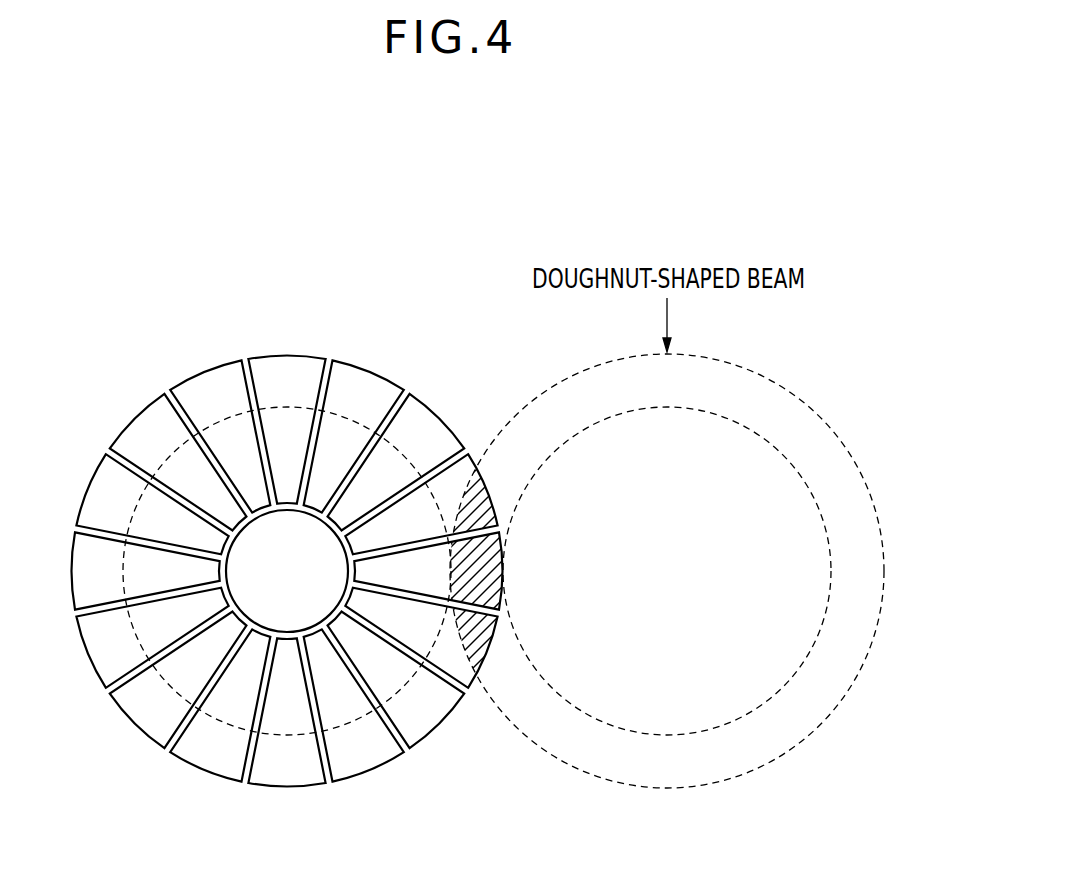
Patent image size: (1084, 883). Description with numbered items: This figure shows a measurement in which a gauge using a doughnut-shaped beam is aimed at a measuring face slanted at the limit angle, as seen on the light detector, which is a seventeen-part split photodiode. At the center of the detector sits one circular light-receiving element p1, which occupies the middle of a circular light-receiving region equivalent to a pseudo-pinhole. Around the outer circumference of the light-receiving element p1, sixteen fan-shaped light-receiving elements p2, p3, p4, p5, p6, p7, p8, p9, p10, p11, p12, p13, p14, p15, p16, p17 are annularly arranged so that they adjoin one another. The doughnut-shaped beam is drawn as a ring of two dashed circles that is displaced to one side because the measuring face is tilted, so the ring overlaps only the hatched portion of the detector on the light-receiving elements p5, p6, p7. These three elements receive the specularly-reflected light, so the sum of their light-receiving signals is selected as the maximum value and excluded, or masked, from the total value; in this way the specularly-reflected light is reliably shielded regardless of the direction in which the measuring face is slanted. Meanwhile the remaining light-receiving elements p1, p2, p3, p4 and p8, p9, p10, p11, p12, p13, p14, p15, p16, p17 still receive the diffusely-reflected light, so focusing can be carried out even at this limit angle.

The circular light-receiving element p1 is at (287, 571).
The fan-shaped light-receiving element p2 is at (286, 430).
The fan-shaped light-receiving element p3 is at (354, 436).
The fan-shaped light-receiving element p4 is at (396, 462).
The fan-shaped light-receiving element p5 is at (421, 504).
The fan-shaped light-receiving element p6 is at (428, 570).
The fan-shaped light-receiving element p7 is at (421, 638).
The fan-shaped light-receiving element p8 is at (396, 680).
The fan-shaped light-receiving element p9 is at (354, 705).
The fan-shaped light-receiving element p10 is at (286, 712).
The fan-shaped light-receiving element p11 is at (220, 705).
The fan-shaped light-receiving element p12 is at (178, 680).
The fan-shaped light-receiving element p13 is at (152, 638).
The fan-shaped light-receiving element p14 is at (146, 570).
The fan-shaped light-receiving element p15 is at (152, 504).
The fan-shaped light-receiving element p16 is at (178, 462).
The fan-shaped light-receiving element p17 is at (220, 436).